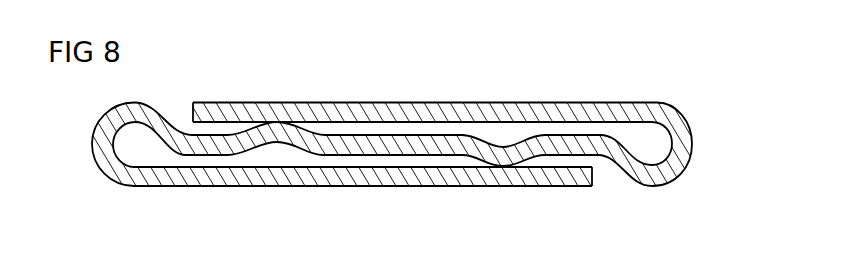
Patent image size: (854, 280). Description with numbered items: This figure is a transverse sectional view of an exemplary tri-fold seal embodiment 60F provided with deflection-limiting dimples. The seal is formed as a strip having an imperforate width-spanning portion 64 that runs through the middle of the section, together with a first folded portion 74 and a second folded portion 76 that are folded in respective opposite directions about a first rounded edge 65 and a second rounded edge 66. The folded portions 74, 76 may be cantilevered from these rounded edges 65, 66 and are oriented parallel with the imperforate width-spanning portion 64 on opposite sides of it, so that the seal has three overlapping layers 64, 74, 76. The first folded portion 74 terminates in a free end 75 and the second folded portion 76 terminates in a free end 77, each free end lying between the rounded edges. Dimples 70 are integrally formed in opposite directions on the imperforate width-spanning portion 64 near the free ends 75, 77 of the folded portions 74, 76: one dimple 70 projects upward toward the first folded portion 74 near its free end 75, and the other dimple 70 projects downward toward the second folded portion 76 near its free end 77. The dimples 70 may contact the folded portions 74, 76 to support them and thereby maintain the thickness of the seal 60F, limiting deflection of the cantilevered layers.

The tri-fold seal embodiment 60F is at (647, 78).
The first rounded edge 65 is at (99, 131).
The second rounded edge 66 is at (688, 137).
The first folded portion 74 is at (417, 113).
The free end of the first folded portion 75 is at (200, 115).
The dimples 70 is at (272, 132).
The imperforate width-spanning portion 64 is at (383, 147).
The second folded portion 76 is at (444, 178).
The free end of the second folded portion 77 is at (580, 180).